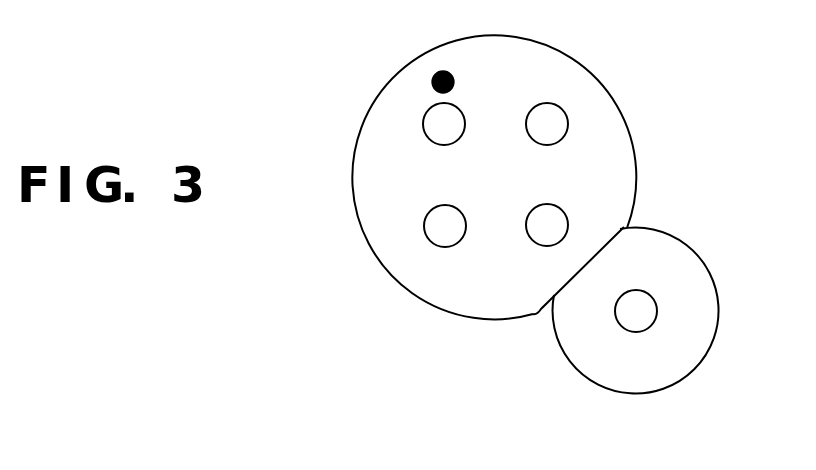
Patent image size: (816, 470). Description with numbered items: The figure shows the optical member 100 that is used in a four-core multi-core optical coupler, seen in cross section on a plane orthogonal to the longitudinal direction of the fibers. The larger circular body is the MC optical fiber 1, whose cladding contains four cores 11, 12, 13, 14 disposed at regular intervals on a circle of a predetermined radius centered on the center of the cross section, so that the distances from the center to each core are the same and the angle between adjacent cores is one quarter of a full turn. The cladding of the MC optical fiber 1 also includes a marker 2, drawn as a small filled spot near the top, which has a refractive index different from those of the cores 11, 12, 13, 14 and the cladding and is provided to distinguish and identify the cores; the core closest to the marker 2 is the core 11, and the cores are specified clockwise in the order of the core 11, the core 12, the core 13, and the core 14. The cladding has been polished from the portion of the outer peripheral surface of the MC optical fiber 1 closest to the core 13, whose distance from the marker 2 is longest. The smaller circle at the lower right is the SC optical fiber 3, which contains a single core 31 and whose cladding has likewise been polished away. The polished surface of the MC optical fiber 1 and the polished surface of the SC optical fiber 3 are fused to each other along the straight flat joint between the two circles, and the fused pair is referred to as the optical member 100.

The optical member 100 is at (338, 63).
The MC optical fiber 1 is at (409, 58).
The marker 2 is at (456, 83).
The core 11 is at (424, 124).
The core 12 is at (568, 125).
The core 13 is at (568, 226).
The core 14 is at (424, 226).
The SC optical fiber 3 is at (717, 282).
The core 31 is at (658, 309).